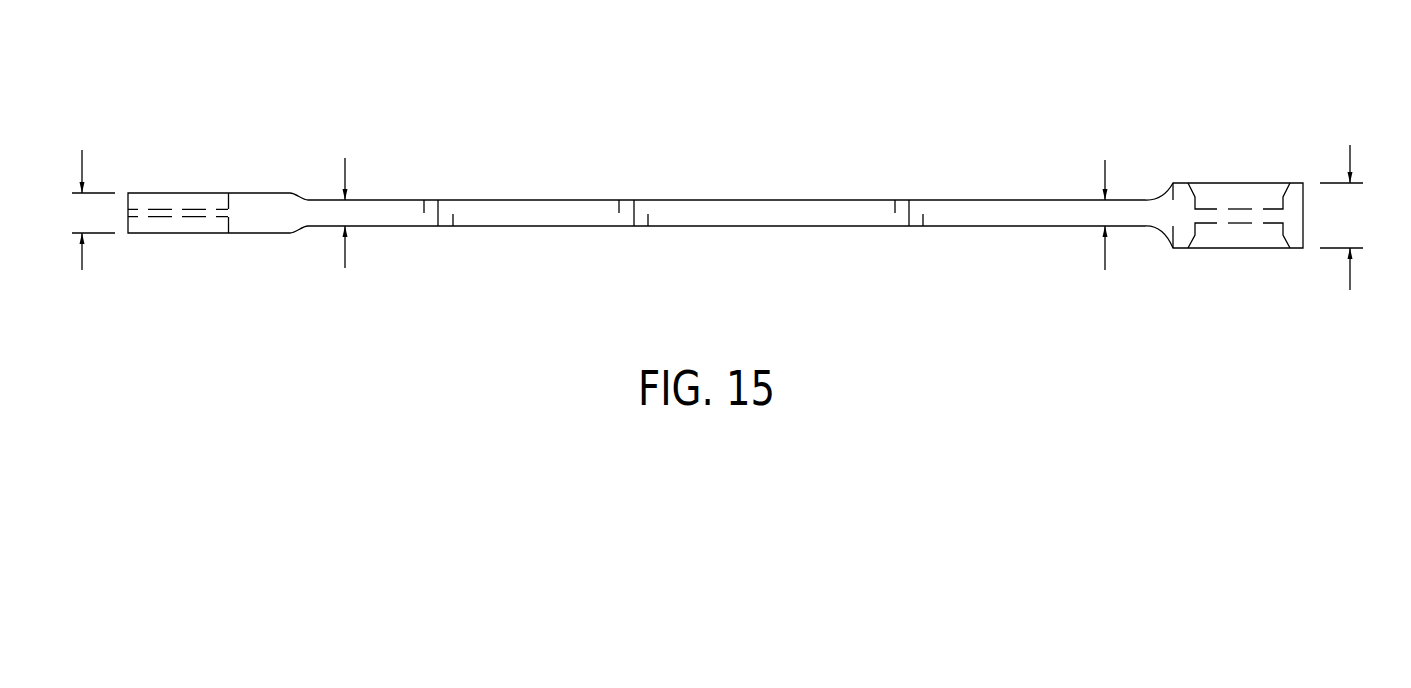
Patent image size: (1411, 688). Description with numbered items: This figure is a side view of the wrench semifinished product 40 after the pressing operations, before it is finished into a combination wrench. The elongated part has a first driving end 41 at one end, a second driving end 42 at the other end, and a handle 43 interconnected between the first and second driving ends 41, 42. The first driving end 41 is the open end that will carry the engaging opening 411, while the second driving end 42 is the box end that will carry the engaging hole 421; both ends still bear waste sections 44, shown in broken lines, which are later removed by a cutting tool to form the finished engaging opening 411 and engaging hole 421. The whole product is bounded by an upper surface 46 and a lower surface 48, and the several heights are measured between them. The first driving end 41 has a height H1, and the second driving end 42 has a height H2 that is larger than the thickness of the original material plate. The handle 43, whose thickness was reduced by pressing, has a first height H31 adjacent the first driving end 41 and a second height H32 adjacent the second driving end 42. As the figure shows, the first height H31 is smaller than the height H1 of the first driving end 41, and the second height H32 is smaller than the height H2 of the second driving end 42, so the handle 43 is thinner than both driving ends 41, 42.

The wrench semifinished product 40 is at (717, 195).
The first driving end 41 is at (264, 210).
The engaging opening 411 is at (142, 202).
The second driving end 42 is at (1295, 202).
The engaging hole 421 is at (1203, 202).
The handle 43 is at (686, 212).
The waste sections 44 is at (187, 208).
The upper surface 46 is at (790, 200).
The lower surface 48 is at (843, 228).
The height of first driving end H1 is at (93, 235).
The height of second driving end H2 is at (1347, 242).
The first height H31 is at (346, 239).
The second height H32 is at (1105, 241).